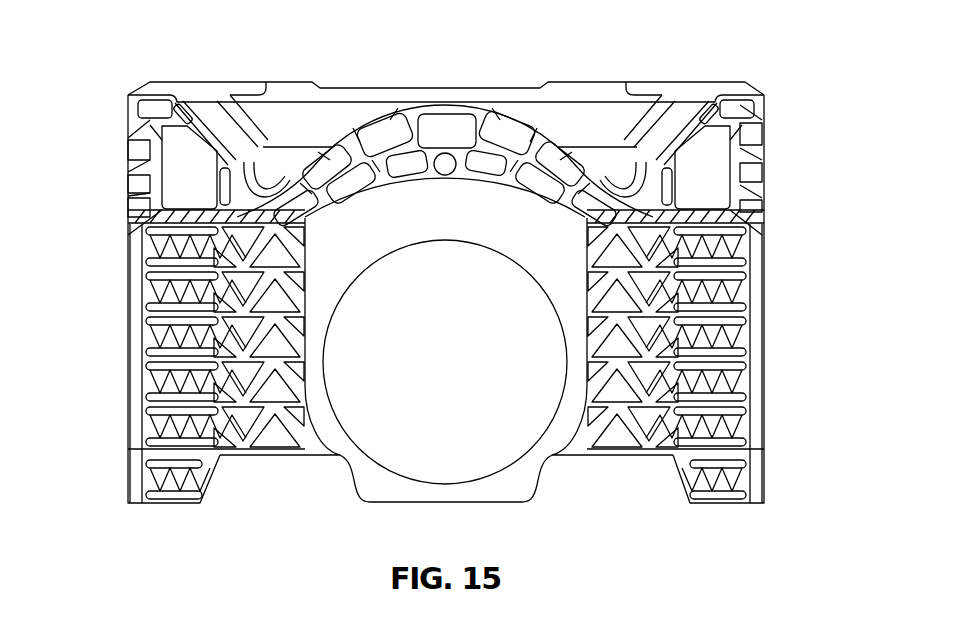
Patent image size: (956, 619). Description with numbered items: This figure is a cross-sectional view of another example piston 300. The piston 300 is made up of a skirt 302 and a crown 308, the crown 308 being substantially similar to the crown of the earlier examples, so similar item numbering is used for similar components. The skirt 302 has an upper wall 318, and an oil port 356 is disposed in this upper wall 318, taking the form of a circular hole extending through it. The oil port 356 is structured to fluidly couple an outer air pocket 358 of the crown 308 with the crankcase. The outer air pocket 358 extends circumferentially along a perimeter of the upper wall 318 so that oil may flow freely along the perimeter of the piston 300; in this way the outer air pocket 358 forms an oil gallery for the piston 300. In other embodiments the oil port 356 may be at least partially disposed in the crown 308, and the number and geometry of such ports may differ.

The piston 300 is at (435, 267).
The crown 308 is at (122, 112).
The skirt 302 is at (122, 387).
The outer air pocket 358 is at (699, 184).
The oil port 356 is at (699, 213).
The upper wall 318 is at (662, 212).